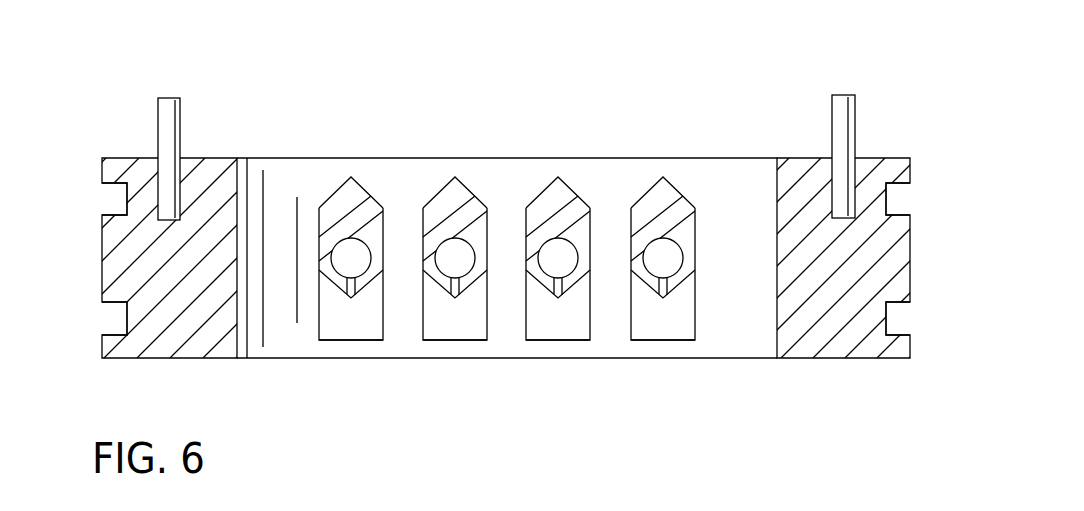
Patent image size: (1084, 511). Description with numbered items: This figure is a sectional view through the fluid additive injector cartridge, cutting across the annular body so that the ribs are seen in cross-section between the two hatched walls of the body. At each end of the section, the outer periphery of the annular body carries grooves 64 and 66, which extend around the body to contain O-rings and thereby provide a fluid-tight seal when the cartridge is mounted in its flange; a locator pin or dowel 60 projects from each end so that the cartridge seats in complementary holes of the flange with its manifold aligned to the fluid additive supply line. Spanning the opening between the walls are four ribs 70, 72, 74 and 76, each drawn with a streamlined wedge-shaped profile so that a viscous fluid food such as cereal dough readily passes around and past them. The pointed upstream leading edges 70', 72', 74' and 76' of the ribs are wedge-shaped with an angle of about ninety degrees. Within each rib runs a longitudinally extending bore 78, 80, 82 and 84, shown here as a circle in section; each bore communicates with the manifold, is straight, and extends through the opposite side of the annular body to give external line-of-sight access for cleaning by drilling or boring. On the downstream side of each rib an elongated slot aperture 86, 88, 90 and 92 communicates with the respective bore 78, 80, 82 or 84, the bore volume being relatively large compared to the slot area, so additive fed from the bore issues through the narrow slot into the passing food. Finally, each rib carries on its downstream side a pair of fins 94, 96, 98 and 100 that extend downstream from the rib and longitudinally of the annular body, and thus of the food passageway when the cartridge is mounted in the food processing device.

The locator pins or dowels 60 is at (168, 97).
The groove 64 is at (104, 197).
The groove 66 is at (104, 322).
The rib 70 is at (322, 302).
The rib 72 is at (438, 268).
The rib 74 is at (541, 268).
The rib 76 is at (646, 268).
The upstream leading edge 70' is at (351, 152).
The upstream leading edge 72' is at (455, 157).
The upstream leading edge 74' is at (563, 156).
The upstream leading edge 76' is at (667, 148).
The longitudinally extending bore 78 is at (351, 258).
The longitudinally extending bore 80 is at (455, 258).
The longitudinally extending bore 82 is at (558, 258).
The longitudinally extending bore 84 is at (663, 258).
The elongated slot aperture 86 is at (351, 298).
The elongated slot aperture 88 is at (455, 298).
The elongated slot aperture 90 is at (558, 298).
The elongated slot aperture 92 is at (663, 298).
The pair of fins 94 is at (351, 340).
The pair of fins 96 is at (455, 340).
The pair of fins 98 is at (558, 340).
The pair of fins 100 is at (663, 340).